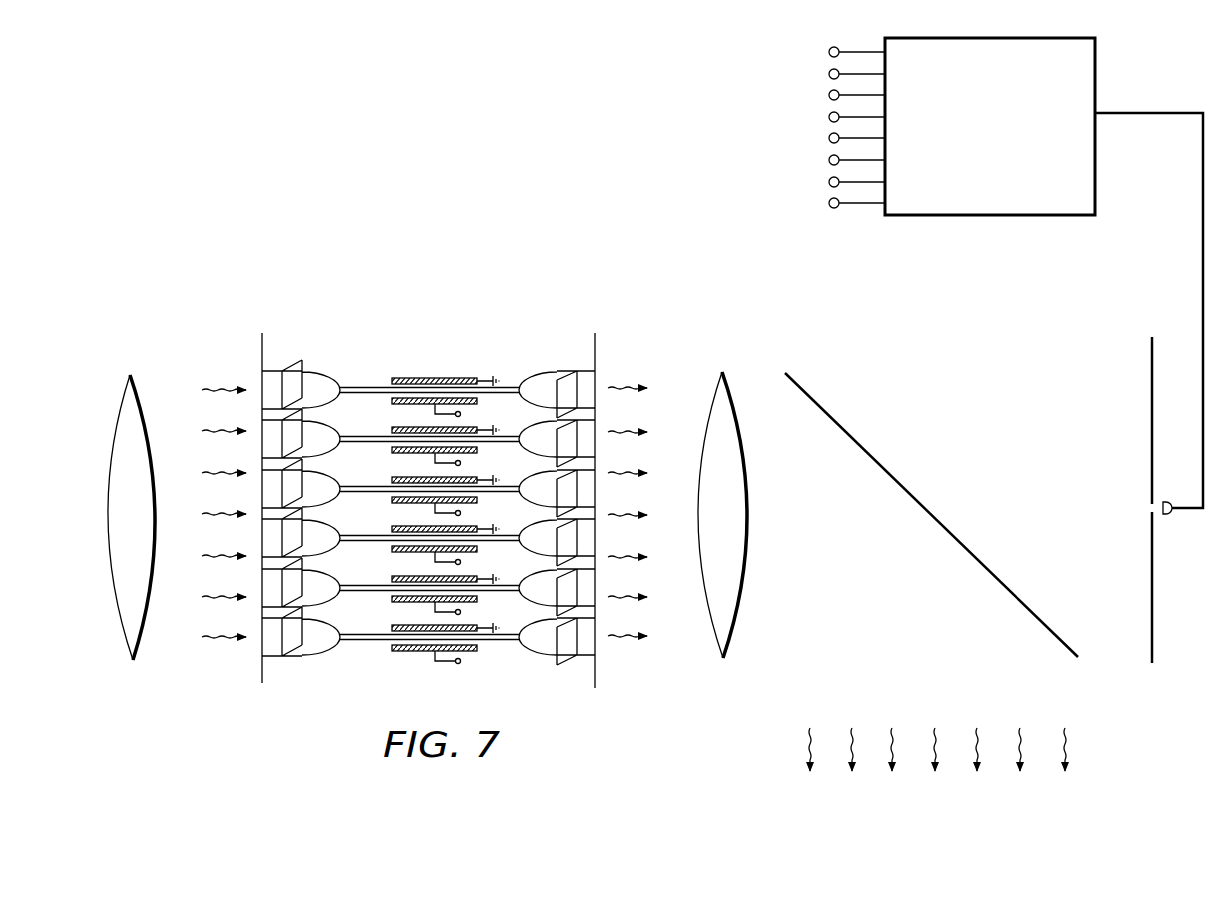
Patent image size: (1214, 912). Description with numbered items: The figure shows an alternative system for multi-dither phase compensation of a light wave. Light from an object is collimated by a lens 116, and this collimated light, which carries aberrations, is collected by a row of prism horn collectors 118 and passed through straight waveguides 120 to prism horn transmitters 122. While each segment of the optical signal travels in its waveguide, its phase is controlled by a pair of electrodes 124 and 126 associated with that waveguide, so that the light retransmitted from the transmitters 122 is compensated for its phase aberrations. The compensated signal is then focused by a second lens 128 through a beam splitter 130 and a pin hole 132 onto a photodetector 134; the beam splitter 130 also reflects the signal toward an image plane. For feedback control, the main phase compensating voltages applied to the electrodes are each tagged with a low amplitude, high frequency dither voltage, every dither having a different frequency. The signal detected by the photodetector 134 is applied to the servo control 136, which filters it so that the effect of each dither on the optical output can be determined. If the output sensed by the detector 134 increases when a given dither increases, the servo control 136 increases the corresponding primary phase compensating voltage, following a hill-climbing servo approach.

The lens 116 is at (135, 386).
The prism horn collectors 118 is at (313, 372).
The straight waveguides 120 is at (366, 387).
The prism horn transmitters 122 is at (557, 371).
The electrode 124 is at (408, 403).
The electrode 126 is at (465, 378).
The lens 128 is at (722, 372).
The beam splitter 130 is at (851, 432).
The pin hole 132 is at (1148, 507).
The photodetector 134 is at (1167, 515).
The servo control 136 is at (1050, 216).